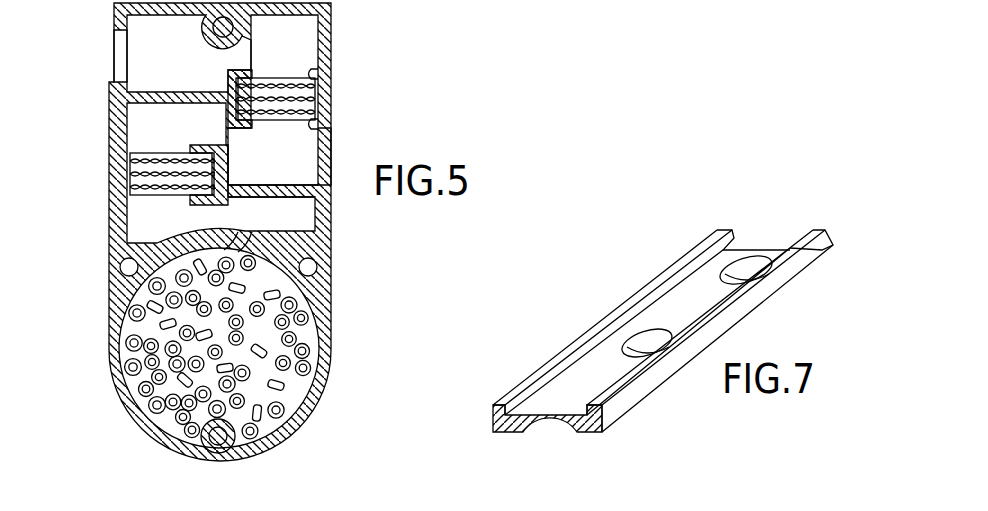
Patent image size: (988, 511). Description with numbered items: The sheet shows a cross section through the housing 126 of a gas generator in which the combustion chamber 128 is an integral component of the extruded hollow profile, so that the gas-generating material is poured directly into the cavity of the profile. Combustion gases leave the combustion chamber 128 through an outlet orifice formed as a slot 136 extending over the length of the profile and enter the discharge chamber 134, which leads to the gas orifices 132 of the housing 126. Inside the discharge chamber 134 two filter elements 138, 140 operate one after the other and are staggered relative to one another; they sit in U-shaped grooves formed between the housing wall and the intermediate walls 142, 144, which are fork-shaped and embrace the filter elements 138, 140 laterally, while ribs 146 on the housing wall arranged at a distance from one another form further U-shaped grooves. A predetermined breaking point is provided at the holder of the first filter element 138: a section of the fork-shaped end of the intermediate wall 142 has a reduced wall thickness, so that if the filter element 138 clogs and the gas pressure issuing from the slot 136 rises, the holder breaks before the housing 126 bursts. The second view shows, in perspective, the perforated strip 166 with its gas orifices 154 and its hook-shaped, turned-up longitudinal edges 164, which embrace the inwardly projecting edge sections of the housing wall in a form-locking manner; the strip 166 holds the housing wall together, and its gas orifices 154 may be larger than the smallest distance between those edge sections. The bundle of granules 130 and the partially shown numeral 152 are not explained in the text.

In FIG. 5, the housing 126 is at (101, 377).
In FIG. 5, the combustion chamber 128 is at (236, 232).
In FIG. 5, the ring-shaped filter media 130 is at (272, 314).
In FIG. 5, the gas orifices 132 is at (113, 42).
In FIG. 5, the discharge chamber 134 is at (303, 43).
In FIG. 5, the slot 136 is at (303, 240).
In FIG. 5, the first filter element 138 is at (172, 152).
In FIG. 5, the second filter element 140 is at (271, 78).
In FIG. 5, the intermediate wall 142 is at (300, 188).
In FIG. 5, the intermediate wall 144 is at (172, 92).
In FIG. 5, the ribs 146 is at (135, 145).
In FIG. 7, the rail member 152 is at (645, 509).
In FIG. 7, the gas orifices 154 is at (750, 267).
In FIG. 7, the turned-up longitudinal edges 164 is at (500, 408).
In FIG. 7, the perforated strip 166 is at (644, 307).